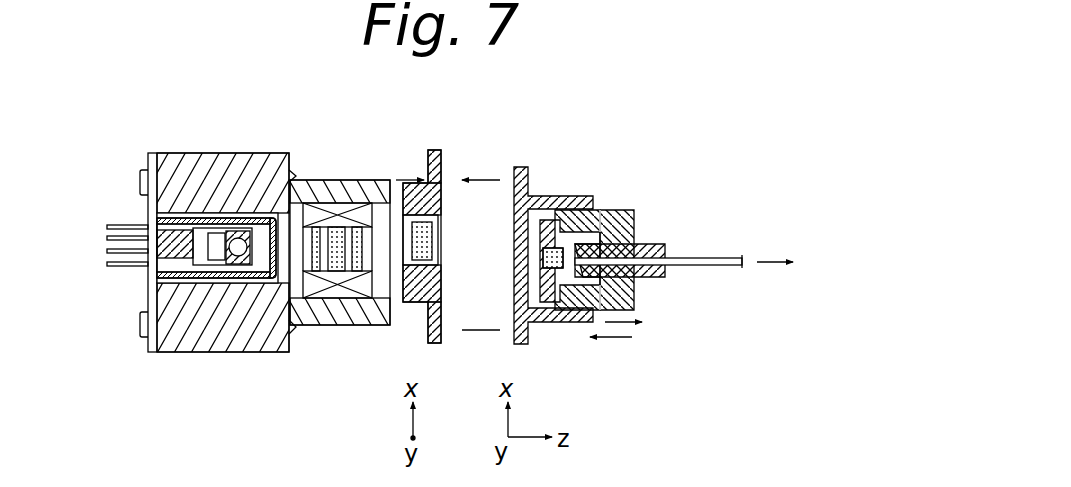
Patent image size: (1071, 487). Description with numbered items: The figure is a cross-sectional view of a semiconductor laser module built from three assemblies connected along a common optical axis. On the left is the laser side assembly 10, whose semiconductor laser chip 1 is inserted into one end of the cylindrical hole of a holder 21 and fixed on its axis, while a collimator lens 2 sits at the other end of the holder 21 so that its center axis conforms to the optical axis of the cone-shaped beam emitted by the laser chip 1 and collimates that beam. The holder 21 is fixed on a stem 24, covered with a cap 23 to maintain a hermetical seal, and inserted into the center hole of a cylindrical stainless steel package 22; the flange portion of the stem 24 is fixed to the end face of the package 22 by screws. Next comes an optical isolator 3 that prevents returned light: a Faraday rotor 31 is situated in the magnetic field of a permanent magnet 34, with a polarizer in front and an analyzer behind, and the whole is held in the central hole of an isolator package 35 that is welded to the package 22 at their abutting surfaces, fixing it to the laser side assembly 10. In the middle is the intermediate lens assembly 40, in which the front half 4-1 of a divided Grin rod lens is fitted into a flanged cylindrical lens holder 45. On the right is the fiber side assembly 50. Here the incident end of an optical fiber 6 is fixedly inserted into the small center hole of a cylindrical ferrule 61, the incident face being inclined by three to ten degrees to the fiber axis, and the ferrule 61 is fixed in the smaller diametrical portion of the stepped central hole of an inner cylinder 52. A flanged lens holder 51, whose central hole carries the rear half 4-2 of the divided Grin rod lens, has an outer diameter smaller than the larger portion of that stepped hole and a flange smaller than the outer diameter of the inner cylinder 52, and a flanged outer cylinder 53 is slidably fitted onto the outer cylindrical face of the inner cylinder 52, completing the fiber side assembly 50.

The laser side assembly 10 is at (242, 90).
The semiconductor laser chip 1 is at (176, 262).
The collimator lens 2 is at (236, 258).
The holder 21 is at (247, 212).
The package 22 is at (186, 172).
The cap 23 is at (270, 283).
The stem 24 is at (153, 207).
The optical isolator 3 is at (333, 265).
The Faraday rotor 31 is at (323, 300).
The permanent magnet 34 is at (380, 178).
The isolator package 35 is at (365, 313).
The intermediate lens assembly 40 is at (438, 90).
The lens holder 45 is at (423, 183).
The front half of divided Grin rod lens 4-1 is at (432, 238).
The fiber side assembly 50 is at (595, 90).
The lens holder 51 is at (575, 213).
The inner cylinder 52 is at (632, 211).
The outer cylinder 53 is at (531, 197).
The rear half of divided Grin rod lens 4-2 is at (553, 302).
The optical fiber 6 is at (716, 258).
The ferrule 61 is at (668, 270).